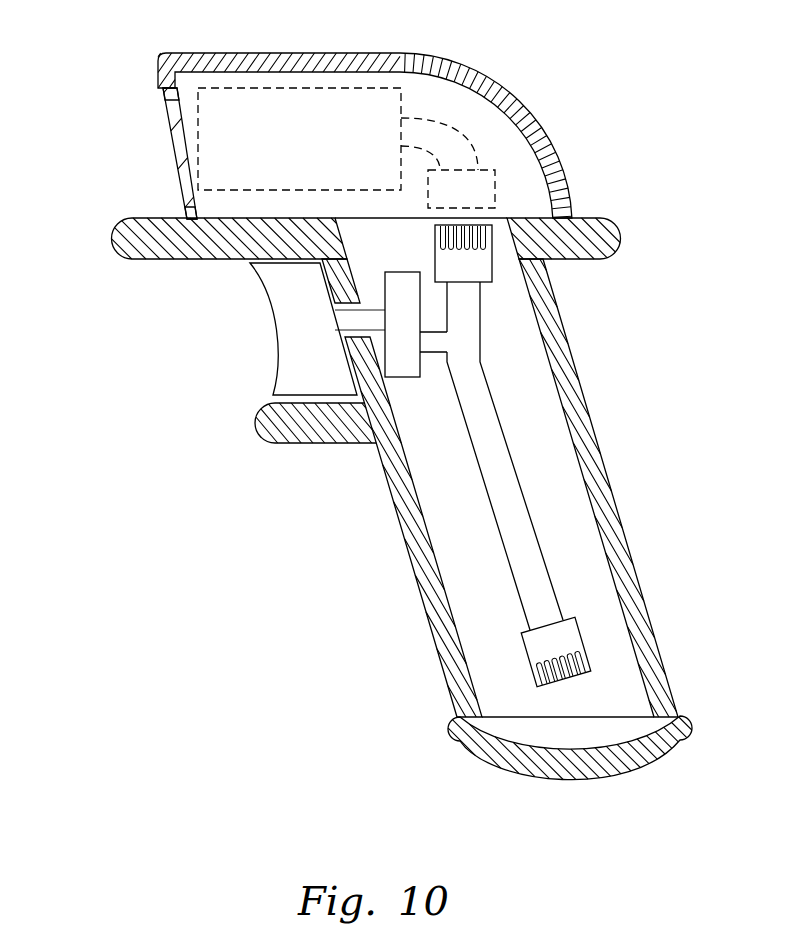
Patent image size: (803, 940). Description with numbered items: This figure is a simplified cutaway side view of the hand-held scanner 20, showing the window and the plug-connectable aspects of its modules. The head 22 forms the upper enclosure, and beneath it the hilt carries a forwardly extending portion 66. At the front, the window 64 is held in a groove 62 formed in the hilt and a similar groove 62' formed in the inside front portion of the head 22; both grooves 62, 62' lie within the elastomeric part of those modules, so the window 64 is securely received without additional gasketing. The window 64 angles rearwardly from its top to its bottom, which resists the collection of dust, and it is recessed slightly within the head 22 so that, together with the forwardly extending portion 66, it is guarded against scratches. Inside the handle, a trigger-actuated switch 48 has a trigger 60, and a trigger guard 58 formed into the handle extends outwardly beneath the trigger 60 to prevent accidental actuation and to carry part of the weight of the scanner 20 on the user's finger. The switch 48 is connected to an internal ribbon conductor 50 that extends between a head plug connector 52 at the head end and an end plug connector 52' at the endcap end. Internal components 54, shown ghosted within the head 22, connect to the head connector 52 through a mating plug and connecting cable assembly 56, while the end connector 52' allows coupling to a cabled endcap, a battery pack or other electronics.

The scanner 20 is at (284, 534).
The head 22 is at (383, 53).
The switch 48 is at (408, 370).
The ribbon conductor 50 is at (490, 423).
The head plug connector 52 is at (526, 271).
The end plug connector 52' is at (488, 655).
The internal components 54 is at (240, 192).
The mating plug and connecting cable assembly 56 is at (475, 180).
The trigger guard 58 is at (272, 430).
The trigger 60 is at (275, 343).
The groove 62 is at (142, 200).
The groove 62' is at (123, 103).
The window 64 is at (175, 148).
The forwardly extending portion 66 is at (110, 236).